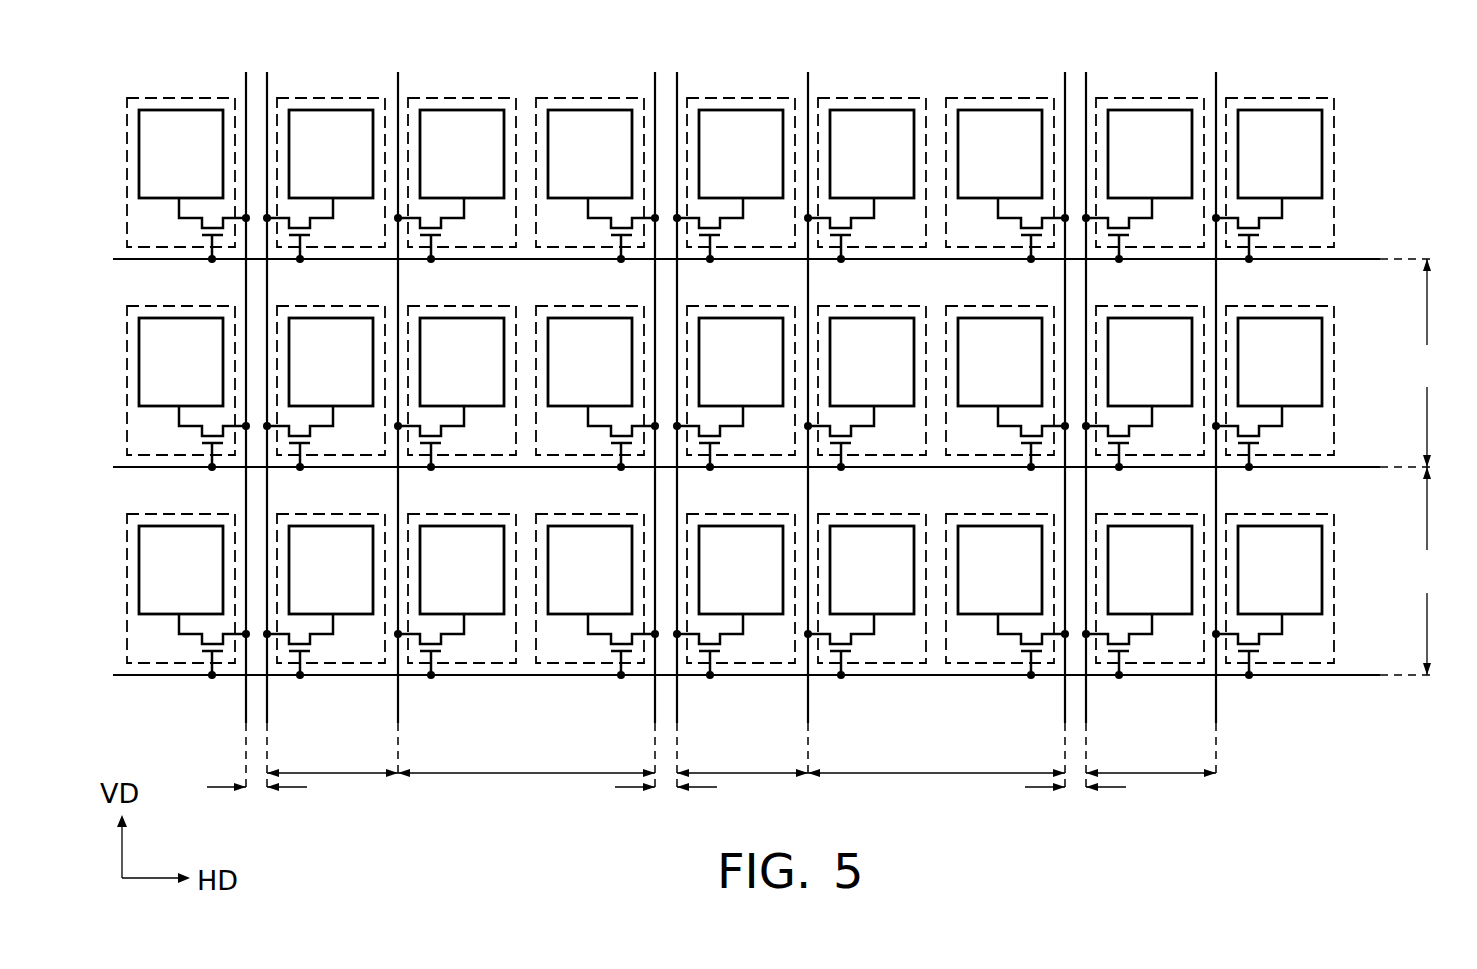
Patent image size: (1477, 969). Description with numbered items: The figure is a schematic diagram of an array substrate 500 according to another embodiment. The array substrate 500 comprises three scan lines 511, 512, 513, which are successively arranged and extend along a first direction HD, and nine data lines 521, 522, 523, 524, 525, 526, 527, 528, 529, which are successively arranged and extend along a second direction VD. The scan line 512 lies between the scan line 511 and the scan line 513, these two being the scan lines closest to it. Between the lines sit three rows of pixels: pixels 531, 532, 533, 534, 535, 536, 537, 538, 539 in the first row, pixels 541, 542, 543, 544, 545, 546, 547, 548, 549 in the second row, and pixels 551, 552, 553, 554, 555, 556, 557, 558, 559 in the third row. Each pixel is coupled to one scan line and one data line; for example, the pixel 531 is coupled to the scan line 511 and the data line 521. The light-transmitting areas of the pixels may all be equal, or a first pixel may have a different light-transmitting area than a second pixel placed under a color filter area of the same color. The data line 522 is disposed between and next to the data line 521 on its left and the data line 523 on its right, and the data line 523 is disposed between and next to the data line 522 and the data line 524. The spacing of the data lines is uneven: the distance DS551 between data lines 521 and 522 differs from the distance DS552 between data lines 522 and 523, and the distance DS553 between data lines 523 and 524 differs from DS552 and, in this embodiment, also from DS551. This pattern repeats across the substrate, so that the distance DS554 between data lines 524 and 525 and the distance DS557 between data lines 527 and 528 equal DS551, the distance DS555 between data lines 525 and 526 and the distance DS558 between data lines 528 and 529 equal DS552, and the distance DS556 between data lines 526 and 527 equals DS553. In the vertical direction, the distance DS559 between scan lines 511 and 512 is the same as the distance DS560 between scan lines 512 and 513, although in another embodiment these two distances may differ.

The array substrate 500 is at (1432, 66).
The scan line 511 is at (1350, 259).
The scan line 512 is at (1350, 467).
The scan line 513 is at (1350, 675).
The data line 521 is at (247, 704).
The data line 522 is at (268, 704).
The data line 523 is at (399, 704).
The data line 524 is at (655, 704).
The data line 525 is at (678, 704).
The data line 526 is at (809, 704).
The data line 527 is at (1065, 704).
The data line 528 is at (1087, 704).
The data line 529 is at (1217, 704).
The pixel 531 is at (188, 162).
The pixel 532 is at (324, 162).
The pixel 533 is at (455, 162).
The pixel 534 is at (597, 162).
The pixel 535 is at (734, 162).
The pixel 536 is at (865, 162).
The pixel 537 is at (1007, 162).
The pixel 538 is at (1143, 162).
The pixel 539 is at (1273, 162).
The pixel 541 is at (188, 370).
The pixel 542 is at (324, 370).
The pixel 543 is at (455, 370).
The pixel 544 is at (597, 370).
The pixel 545 is at (734, 370).
The pixel 546 is at (865, 370).
The pixel 547 is at (1007, 370).
The pixel 548 is at (1143, 370).
The pixel 549 is at (1273, 370).
The pixel 551 is at (188, 578).
The pixel 552 is at (324, 578).
The pixel 553 is at (455, 578).
The pixel 554 is at (597, 578).
The pixel 555 is at (734, 578).
The pixel 556 is at (865, 578).
The pixel 557 is at (1007, 578).
The pixel 558 is at (1143, 578).
The pixel 559 is at (1273, 578).
The distance DS551 is at (257, 811).
The distance DS552 is at (332, 755).
The distance DS553 is at (526, 755).
The distance DS554 is at (666, 811).
The distance DS555 is at (742, 755).
The distance DS556 is at (936, 755).
The distance DS557 is at (1075, 811).
The distance between data lines 528 and 529 DS558 is at (1151, 755).
The distance DS559 is at (1423, 363).
The distance DS560 is at (1423, 571).